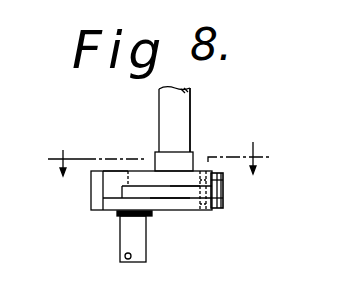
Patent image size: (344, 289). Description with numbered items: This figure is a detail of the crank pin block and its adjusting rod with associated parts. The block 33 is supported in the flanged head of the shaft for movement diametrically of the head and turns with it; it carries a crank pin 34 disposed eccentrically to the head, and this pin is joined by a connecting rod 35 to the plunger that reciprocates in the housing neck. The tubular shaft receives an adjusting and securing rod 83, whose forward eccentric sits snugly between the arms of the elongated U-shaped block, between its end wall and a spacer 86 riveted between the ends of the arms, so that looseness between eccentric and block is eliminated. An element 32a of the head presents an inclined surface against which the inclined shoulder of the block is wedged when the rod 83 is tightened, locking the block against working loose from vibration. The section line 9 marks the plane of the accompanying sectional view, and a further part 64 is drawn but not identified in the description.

The adjusting and securing rod 83 is at (182, 104).
The block 33 is at (112, 171).
The section line 9- 9 is at (159, 146).
The connecting rod 35 is at (98, 192).
The crank pin 34 is at (127, 236).
The element of head 32a is at (166, 202).
The slide bar 64 is at (178, 199).
The spacer 86 is at (225, 190).